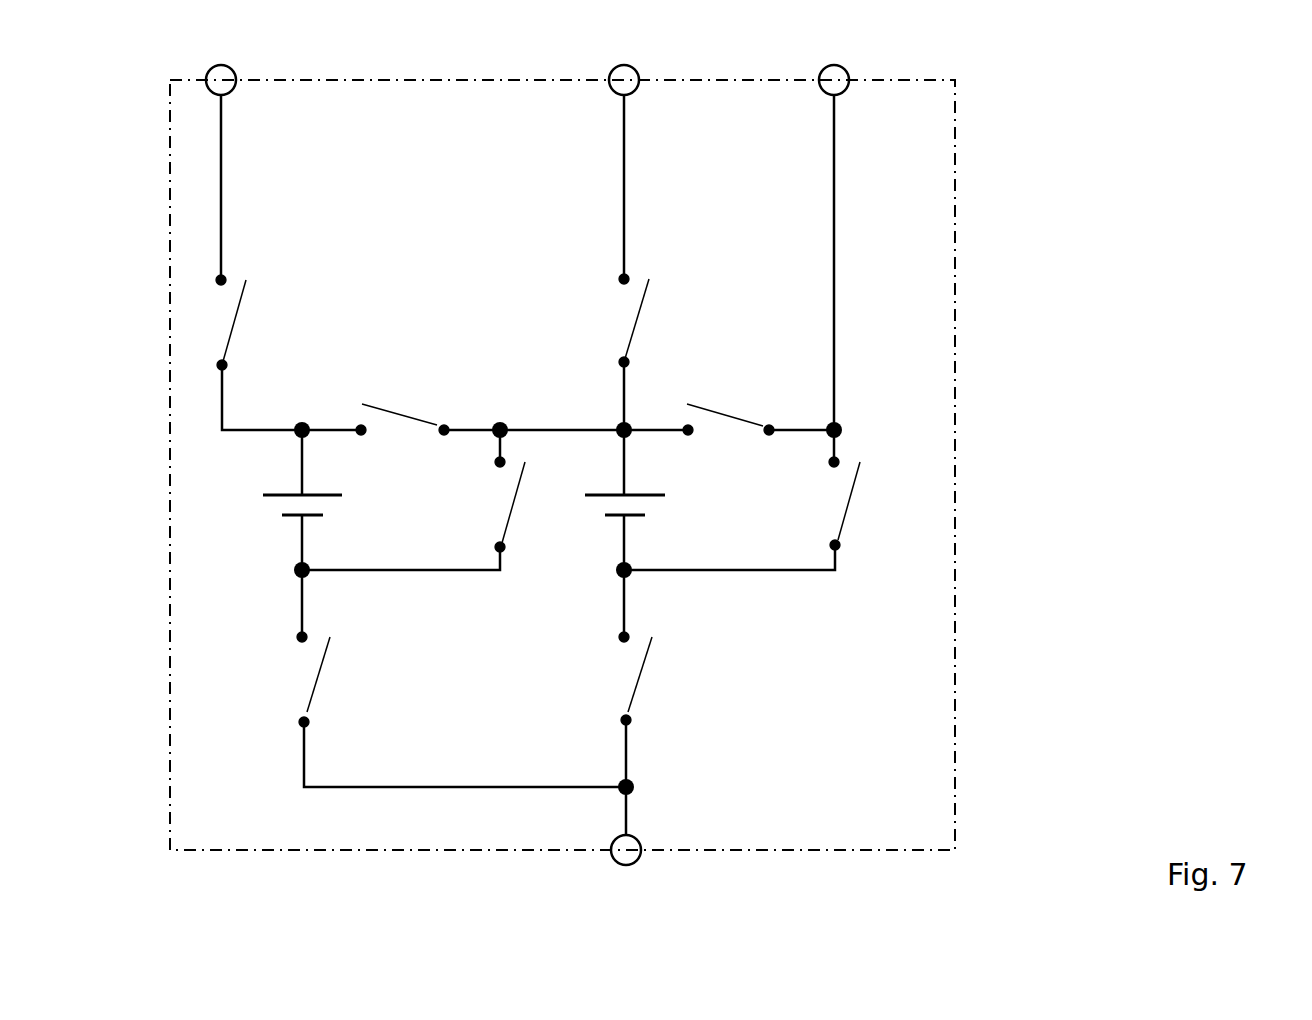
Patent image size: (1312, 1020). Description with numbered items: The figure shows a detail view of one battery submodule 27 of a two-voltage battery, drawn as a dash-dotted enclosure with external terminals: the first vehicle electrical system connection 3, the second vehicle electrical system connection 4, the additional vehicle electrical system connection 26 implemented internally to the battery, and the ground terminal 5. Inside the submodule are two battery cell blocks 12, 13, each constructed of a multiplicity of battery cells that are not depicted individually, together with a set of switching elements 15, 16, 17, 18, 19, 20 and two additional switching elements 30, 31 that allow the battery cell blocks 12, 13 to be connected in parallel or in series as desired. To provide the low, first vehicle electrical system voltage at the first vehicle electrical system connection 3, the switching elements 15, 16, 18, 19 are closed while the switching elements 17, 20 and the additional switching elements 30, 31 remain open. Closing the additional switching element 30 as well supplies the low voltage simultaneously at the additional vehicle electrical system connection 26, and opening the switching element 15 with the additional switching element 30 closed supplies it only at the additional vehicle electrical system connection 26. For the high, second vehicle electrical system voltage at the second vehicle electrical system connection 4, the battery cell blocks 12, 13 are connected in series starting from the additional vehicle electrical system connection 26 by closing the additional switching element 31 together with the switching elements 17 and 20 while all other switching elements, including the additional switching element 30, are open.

The first vehicle electrical system connection 3 is at (624, 78).
The second vehicle electrical system connection 4 is at (220, 78).
The ground terminal 5 is at (636, 846).
The additional vehicle electrical system connection 26 is at (836, 76).
The battery submodule 27 is at (962, 328).
The battery cell block 12 is at (690, 505).
The battery cell block 13 is at (355, 510).
The switching element 15 is at (607, 313).
The switching element 16 is at (670, 675).
The switching element 17 is at (522, 520).
The switching element 18 is at (402, 400).
The switching element 19 is at (335, 677).
The switching element 20 is at (208, 320).
The additional switching element 30 is at (733, 400).
The additional switching element 31 is at (865, 498).